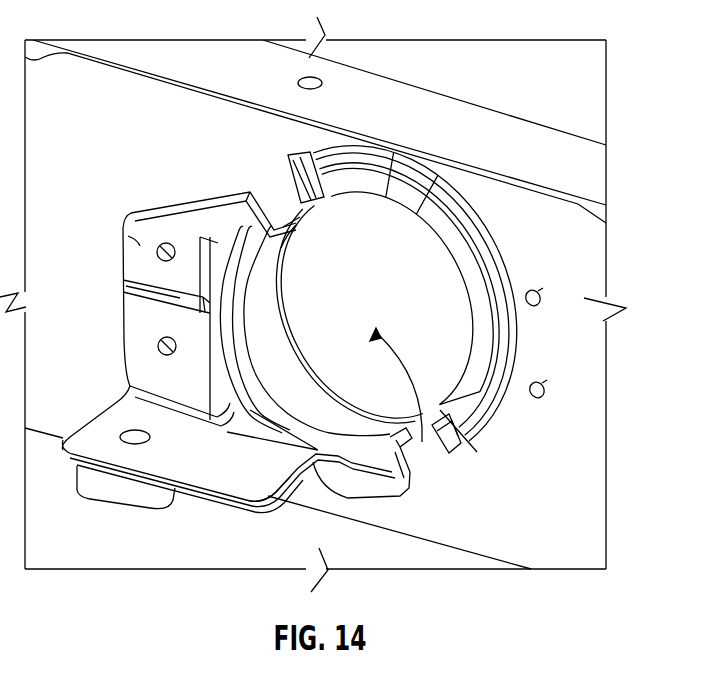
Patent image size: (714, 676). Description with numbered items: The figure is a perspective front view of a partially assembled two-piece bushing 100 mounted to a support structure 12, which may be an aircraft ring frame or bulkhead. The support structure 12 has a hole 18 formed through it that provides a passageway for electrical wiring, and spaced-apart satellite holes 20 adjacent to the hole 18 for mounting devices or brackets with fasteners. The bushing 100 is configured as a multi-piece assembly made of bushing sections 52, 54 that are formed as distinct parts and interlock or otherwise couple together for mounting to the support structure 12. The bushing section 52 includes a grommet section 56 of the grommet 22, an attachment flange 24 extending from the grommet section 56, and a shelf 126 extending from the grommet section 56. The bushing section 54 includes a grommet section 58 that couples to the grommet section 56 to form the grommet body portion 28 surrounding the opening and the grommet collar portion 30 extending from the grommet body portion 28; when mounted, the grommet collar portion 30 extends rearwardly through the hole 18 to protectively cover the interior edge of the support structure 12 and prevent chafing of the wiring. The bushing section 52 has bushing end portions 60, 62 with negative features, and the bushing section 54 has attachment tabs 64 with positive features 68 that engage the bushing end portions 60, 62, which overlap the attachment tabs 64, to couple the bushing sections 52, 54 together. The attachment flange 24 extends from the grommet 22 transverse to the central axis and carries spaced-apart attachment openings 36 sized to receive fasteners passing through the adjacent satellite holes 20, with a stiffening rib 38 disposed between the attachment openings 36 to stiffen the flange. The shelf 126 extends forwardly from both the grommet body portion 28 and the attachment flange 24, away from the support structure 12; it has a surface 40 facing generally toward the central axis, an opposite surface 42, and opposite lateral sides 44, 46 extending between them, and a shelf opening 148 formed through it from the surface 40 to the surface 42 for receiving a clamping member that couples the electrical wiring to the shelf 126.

The support structure 12 is at (587, 352).
The hole 18 is at (401, 397).
The satellite holes 20 is at (549, 390).
The grommet 22 is at (460, 252).
The attachment flange 24 is at (143, 372).
The grommet body portion 28 is at (482, 290).
The grommet collar portion 30 is at (250, 376).
The attachment openings 36 is at (158, 346).
The stiffening rib 38 is at (133, 293).
The surface 40 is at (143, 453).
The surface 42 is at (231, 510).
The lateral side 44 is at (97, 413).
The lateral side 46 is at (273, 473).
The bushing section 52 is at (140, 323).
The bushing section 54 is at (484, 427).
The grommet section 56 is at (257, 413).
The grommet section 58 is at (434, 203).
The bushing end portion 60 is at (270, 232).
The bushing end portion 62 is at (410, 468).
The attachment tabs 64 is at (478, 430).
The positive features 68 is at (442, 440).
The bushing 100 is at (470, 203).
The shelf 126 is at (205, 452).
The shelf opening 148 is at (133, 433).